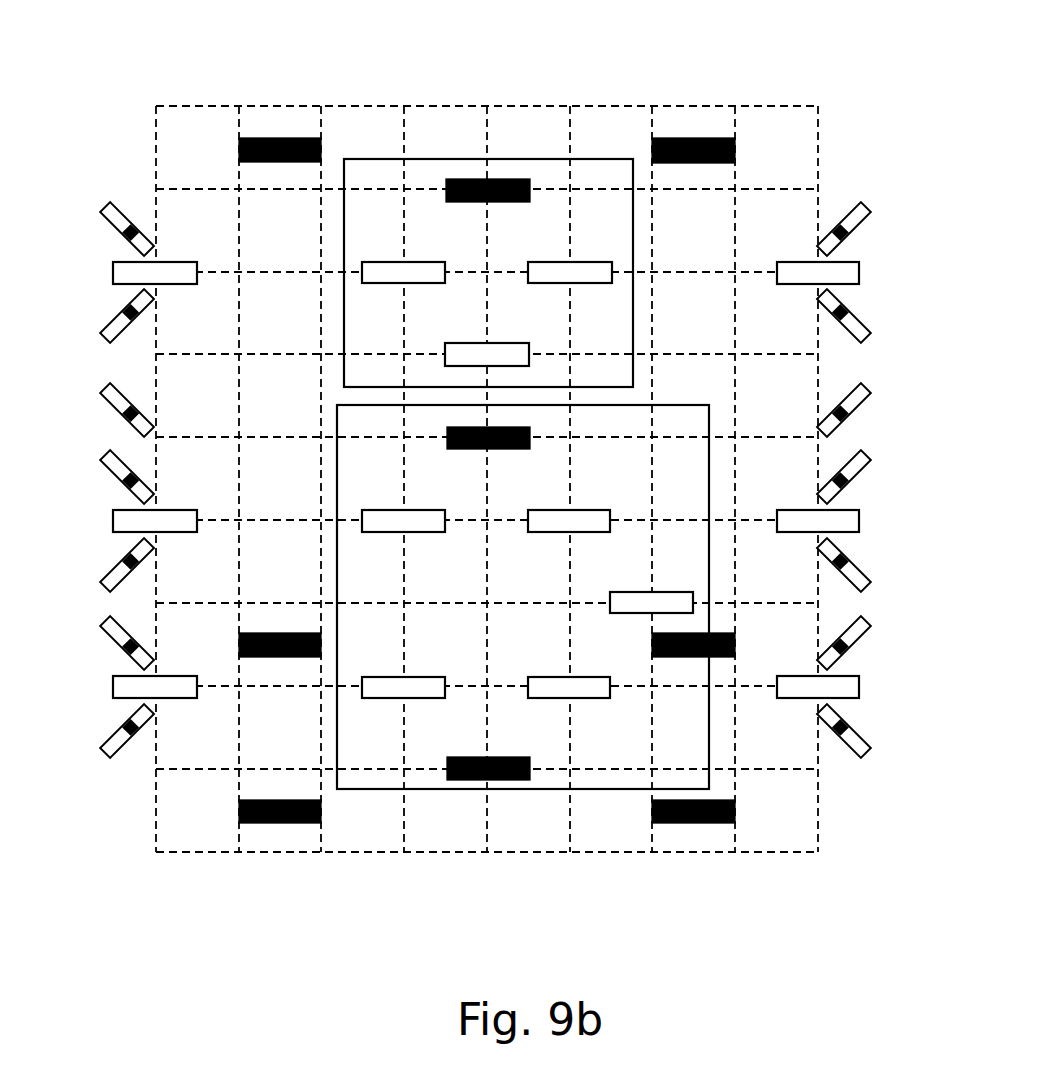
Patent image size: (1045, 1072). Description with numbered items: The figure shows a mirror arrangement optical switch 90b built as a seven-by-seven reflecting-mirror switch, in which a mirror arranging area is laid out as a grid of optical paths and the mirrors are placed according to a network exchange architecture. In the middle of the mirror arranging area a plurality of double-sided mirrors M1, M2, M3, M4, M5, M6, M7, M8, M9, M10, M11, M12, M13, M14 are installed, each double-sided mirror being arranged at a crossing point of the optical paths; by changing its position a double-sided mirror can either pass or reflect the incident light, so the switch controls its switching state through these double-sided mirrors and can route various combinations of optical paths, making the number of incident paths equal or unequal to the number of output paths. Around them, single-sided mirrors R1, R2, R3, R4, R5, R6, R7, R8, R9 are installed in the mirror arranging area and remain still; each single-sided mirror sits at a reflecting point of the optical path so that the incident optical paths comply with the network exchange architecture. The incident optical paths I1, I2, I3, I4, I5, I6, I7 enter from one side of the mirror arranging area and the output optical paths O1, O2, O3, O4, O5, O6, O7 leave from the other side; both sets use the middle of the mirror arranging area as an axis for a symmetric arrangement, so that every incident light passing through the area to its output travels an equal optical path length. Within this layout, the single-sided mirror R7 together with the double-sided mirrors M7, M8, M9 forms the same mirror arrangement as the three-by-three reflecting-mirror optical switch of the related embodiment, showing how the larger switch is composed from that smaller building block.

The mirror arrangement optical switch 90b is at (867, 57).
The single-sided mirror R1 is at (283, 138).
The single-sided mirror R2 is at (285, 633).
The single-sided mirror R3 is at (280, 824).
The single-sided mirror R4 is at (695, 138).
The single-sided mirror R5 is at (676, 658).
The single-sided mirror R6 is at (693, 824).
The single-sided mirror R7 is at (470, 179).
The single-sided mirror R8 is at (508, 450).
The single-sided mirror R9 is at (470, 781).
The double-sided mirror M1 is at (182, 262).
The double-sided mirror M2 is at (188, 510).
The double-sided mirror M3 is at (188, 677).
The double-sided mirror M4 is at (790, 262).
The double-sided mirror M5 is at (792, 510).
The double-sided mirror M6 is at (792, 677).
The double-sided mirror M7 is at (425, 262).
The double-sided mirror M8 is at (592, 262).
The double-sided mirror M9 is at (458, 343).
The double-sided mirror M10 is at (440, 510).
The double-sided mirror M11 is at (618, 510).
The double-sided mirror M12 is at (442, 677).
The double-sided mirror M13 is at (545, 677).
The double-sided mirror M14 is at (632, 592).
The incident optical path I1 is at (104, 206).
The incident optical path I2 is at (104, 338).
The incident optical path I3 is at (104, 455).
The incident optical path I4 is at (104, 587).
The incident optical path I5 is at (104, 621).
The incident optical path I6 is at (104, 753).
The incident optical path I7 is at (104, 388).
The output optical path O1 is at (868, 207).
The output optical path O2 is at (868, 338).
The output optical path O3 is at (868, 455).
The output optical path O4 is at (868, 587).
The output optical path O5 is at (868, 621).
The output optical path O6 is at (868, 753).
The output optical path O7 is at (868, 388).